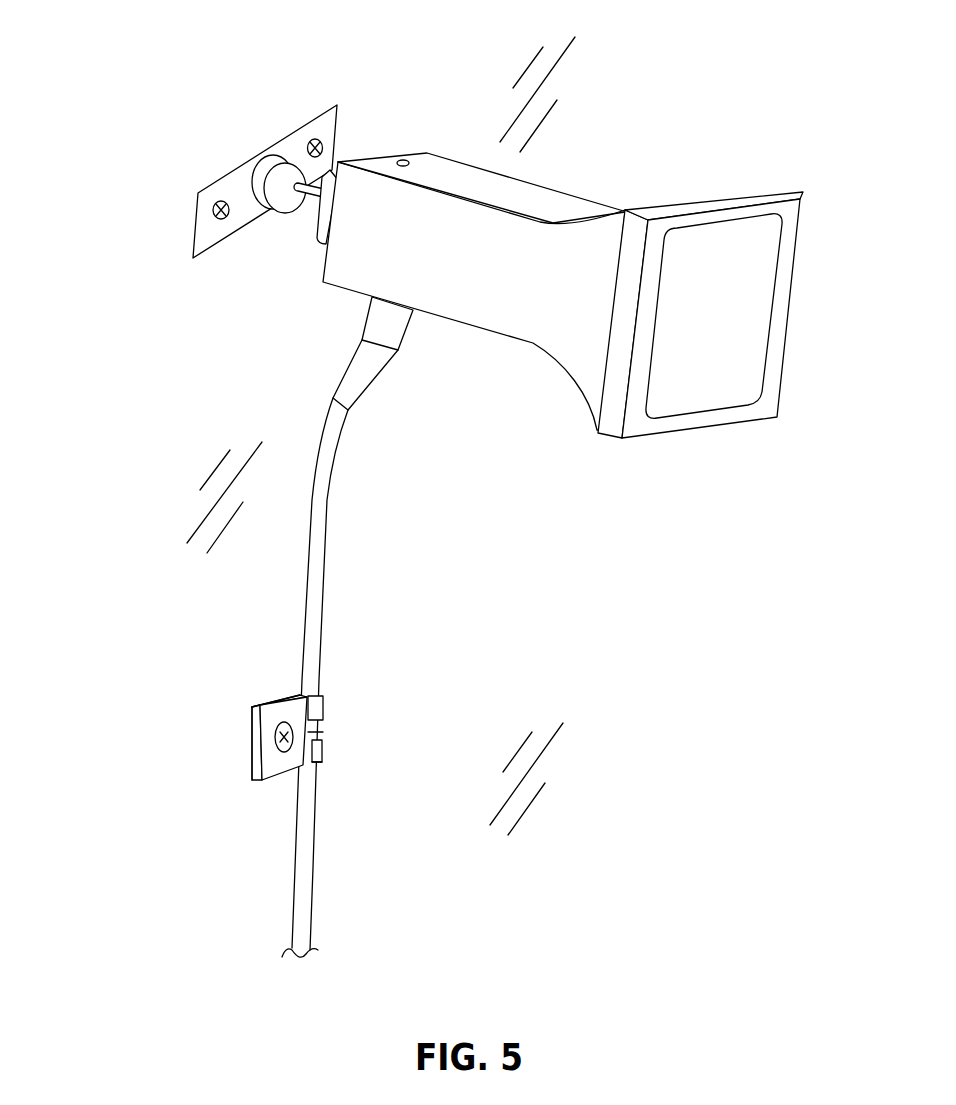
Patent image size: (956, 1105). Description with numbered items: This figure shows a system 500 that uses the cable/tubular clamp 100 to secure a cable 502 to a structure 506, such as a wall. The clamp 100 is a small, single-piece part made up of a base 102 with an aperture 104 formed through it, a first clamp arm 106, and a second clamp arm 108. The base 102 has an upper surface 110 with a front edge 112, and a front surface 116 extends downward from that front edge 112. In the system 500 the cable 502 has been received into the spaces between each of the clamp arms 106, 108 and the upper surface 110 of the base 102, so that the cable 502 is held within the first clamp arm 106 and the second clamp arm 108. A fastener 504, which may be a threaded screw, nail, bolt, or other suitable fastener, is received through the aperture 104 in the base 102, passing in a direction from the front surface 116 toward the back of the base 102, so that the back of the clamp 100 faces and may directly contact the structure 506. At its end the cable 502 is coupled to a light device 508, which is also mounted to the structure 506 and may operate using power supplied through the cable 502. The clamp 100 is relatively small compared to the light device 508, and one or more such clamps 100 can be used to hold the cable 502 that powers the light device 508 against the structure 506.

The system 500 is at (681, 72).
The light device 508 is at (528, 203).
The cable 502 is at (325, 562).
The structure 506 is at (277, 563).
The cable/tubular clamp 100 is at (247, 682).
The base 102 is at (265, 793).
The aperture 104 is at (260, 730).
The first clamp arm 106 is at (293, 707).
The fastener 504 is at (277, 744).
The front surface 116 is at (320, 700).
The front edge 112 is at (320, 732).
The second clamp arm 108 is at (318, 747).
The upper surface 110 is at (310, 766).